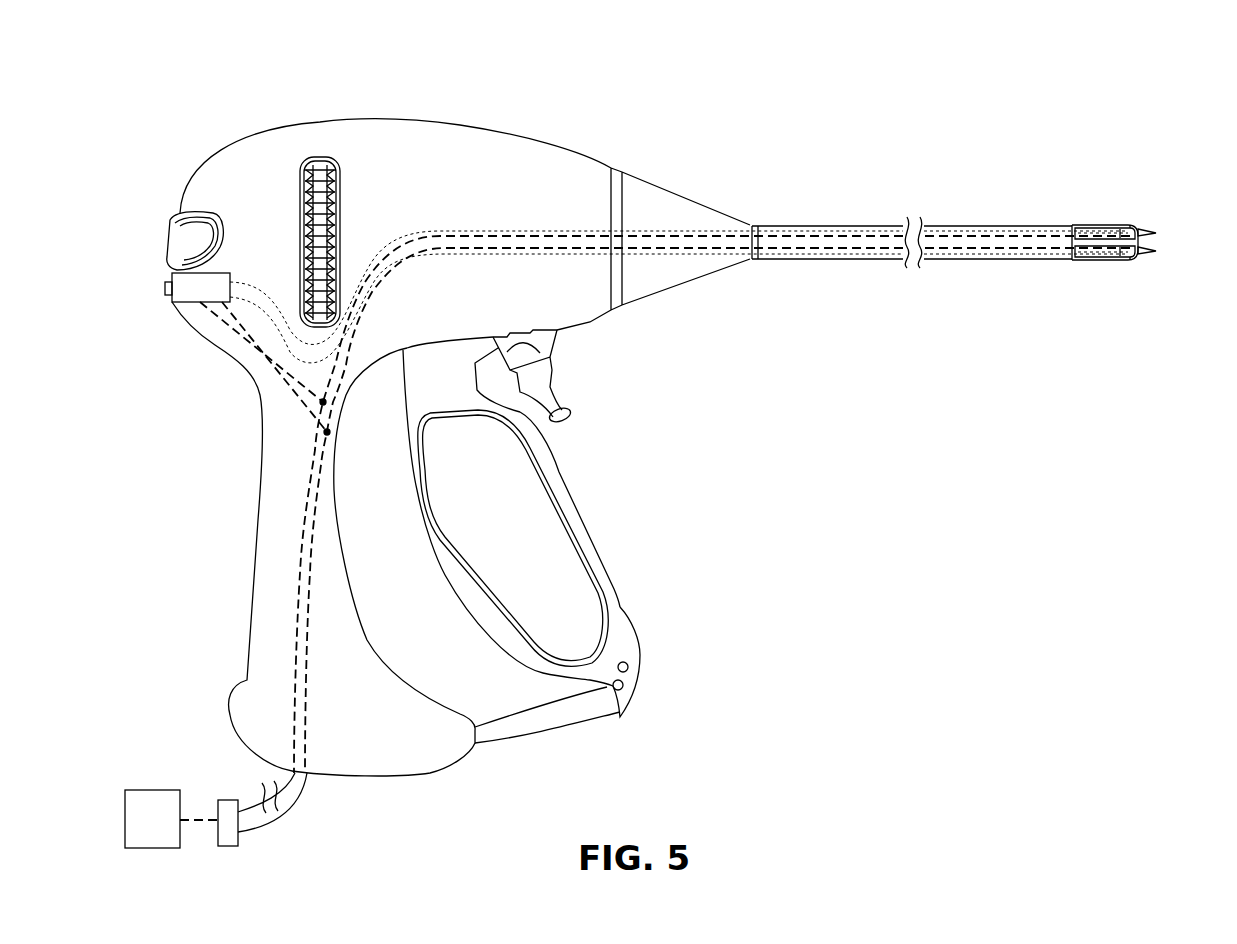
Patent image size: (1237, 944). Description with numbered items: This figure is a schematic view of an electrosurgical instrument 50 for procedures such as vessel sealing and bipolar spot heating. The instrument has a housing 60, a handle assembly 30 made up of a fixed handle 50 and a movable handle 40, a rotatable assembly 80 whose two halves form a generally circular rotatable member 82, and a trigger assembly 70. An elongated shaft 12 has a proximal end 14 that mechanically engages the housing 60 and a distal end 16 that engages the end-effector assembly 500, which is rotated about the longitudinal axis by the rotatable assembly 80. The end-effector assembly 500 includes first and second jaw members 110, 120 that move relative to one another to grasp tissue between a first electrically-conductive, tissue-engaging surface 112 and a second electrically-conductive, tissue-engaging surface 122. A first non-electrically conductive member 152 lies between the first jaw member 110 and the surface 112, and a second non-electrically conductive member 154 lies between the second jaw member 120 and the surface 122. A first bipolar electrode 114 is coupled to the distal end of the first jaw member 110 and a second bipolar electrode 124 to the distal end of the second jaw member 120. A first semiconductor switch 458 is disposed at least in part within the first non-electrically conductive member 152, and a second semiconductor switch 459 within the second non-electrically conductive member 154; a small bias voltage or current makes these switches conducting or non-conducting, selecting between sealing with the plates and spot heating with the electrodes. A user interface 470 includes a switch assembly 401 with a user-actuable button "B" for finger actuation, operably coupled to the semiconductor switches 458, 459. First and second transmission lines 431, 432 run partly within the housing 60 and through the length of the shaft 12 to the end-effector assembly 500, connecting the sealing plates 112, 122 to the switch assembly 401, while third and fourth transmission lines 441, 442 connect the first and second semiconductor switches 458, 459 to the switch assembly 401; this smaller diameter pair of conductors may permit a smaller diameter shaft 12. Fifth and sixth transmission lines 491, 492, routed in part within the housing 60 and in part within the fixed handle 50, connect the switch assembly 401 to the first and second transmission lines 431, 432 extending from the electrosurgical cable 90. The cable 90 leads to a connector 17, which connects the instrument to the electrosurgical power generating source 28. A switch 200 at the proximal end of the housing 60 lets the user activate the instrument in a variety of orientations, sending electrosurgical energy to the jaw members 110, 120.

The electrosurgical instrument 50 is at (889, 85).
The housing 60 is at (538, 128).
The trigger assembly 70 is at (570, 382).
The handle assembly 30 is at (578, 752).
The movable handle 40 is at (638, 672).
The rotatable assembly 80 is at (340, 183).
The rotatable member 82 is at (318, 158).
The switch 200 is at (180, 240).
The user-actuable button B is at (165, 287).
The switch assembly 401 is at (190, 304).
The user interface 470 is at (160, 190).
The fifth transmission line 491 is at (277, 390).
The sixth transmission line 492 is at (300, 378).
The first transmission line 431 is at (297, 607).
The second transmission line 432 is at (308, 632).
The third transmission line 441 is at (858, 231).
The fourth transmission line 442 is at (850, 256).
The elongated shaft 12 is at (937, 208).
The proximal end 14 is at (790, 222).
The distal end 16 is at (1053, 222).
The end-effector assembly 500 is at (1068, 170).
The first jaw member 110 is at (1113, 226).
The first electrically-conductive tissue-engaging surface 112 is at (1093, 234).
The first bipolar electrode 114 is at (1152, 230).
The second jaw member 120 is at (1113, 260).
The second electrically-conductive tissue-engaging surface 122 is at (1093, 251).
The second bipolar electrode 124 is at (1152, 254).
The first non-electrically conductive member 152 is at (1143, 228).
The second non-electrically conductive member 154 is at (1143, 258).
The first semiconductor switch 458 is at (1124, 228).
The second semiconductor switch 459 is at (1124, 259).
The connector 17 is at (227, 800).
The electrosurgical power generating source 28 is at (139, 831).
The electrosurgical cable 90 is at (275, 830).